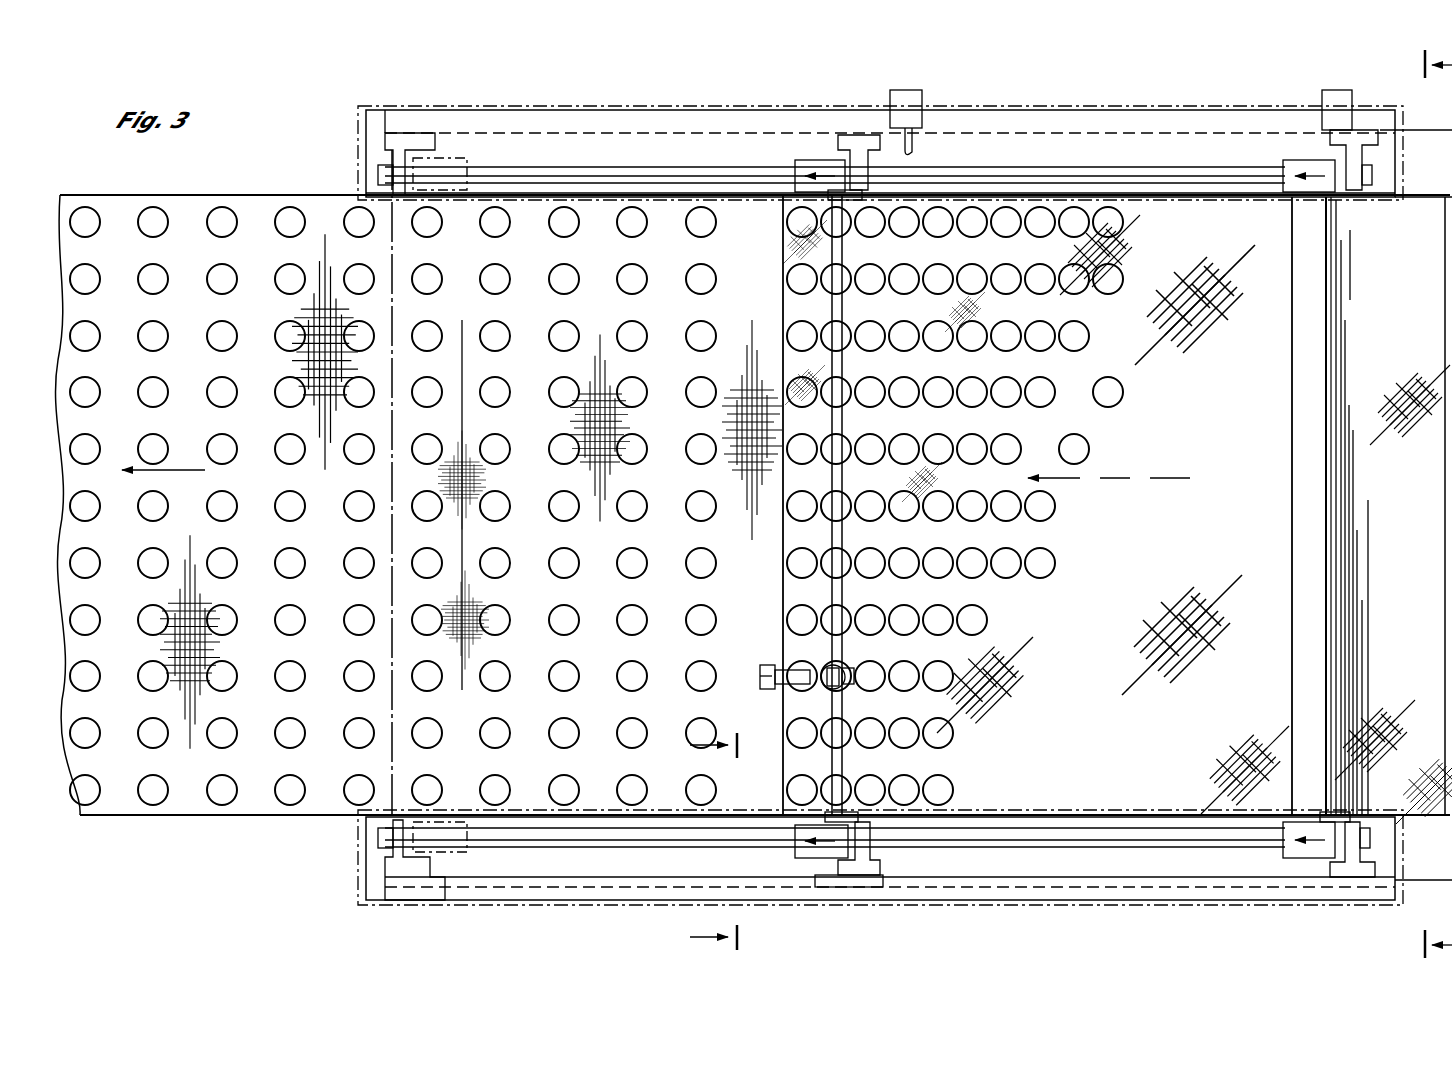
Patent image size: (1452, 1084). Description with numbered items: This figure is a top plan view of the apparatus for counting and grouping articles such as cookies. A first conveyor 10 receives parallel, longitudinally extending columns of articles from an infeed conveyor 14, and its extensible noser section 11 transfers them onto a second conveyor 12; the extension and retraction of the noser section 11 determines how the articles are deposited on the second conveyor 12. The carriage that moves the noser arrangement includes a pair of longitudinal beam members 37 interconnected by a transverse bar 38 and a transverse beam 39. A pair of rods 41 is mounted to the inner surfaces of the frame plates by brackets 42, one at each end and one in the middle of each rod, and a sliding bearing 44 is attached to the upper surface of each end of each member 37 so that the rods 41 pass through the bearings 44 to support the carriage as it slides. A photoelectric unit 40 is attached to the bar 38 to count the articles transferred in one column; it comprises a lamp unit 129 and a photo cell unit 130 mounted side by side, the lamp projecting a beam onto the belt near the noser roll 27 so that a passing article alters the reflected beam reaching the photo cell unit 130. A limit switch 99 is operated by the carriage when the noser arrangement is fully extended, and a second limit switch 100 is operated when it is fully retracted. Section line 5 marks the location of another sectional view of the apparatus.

The section line 5- 5 is at (1428, 504).
The first conveyor 10 is at (730, 842).
The extensible noser section 11 is at (772, 314).
The second conveyor 12 is at (108, 195).
The infeed conveyor 14 is at (1412, 200).
The noser roll 27 is at (788, 218).
The longitudinal beam members 37 is at (1052, 162).
The transverse bar 38 is at (835, 248).
The transverse beam 39 is at (1318, 385).
The photoelectric unit 40 is at (812, 646).
The rods 41 is at (598, 170).
The brackets 42 is at (395, 152).
The sliding bearing 44 is at (456, 160).
The limit switch 99 is at (915, 95).
The second limit switch 100 is at (1340, 95).
The lamp unit 129 is at (840, 668).
The photo cell unit 130 is at (795, 688).